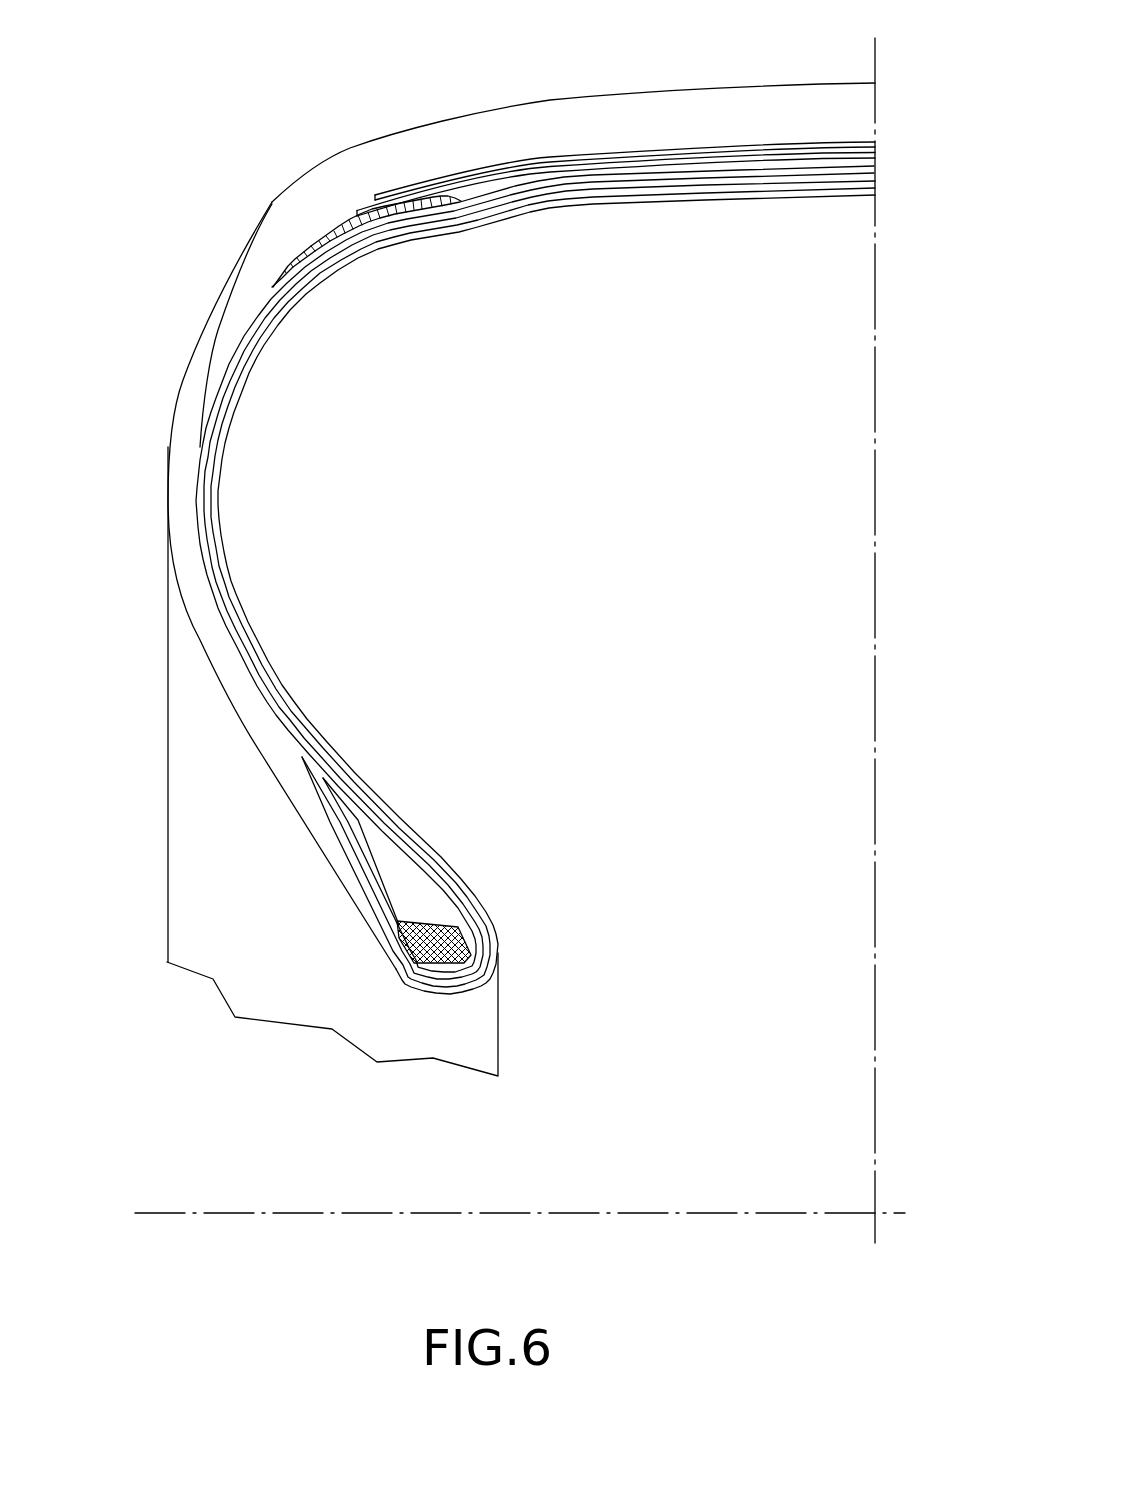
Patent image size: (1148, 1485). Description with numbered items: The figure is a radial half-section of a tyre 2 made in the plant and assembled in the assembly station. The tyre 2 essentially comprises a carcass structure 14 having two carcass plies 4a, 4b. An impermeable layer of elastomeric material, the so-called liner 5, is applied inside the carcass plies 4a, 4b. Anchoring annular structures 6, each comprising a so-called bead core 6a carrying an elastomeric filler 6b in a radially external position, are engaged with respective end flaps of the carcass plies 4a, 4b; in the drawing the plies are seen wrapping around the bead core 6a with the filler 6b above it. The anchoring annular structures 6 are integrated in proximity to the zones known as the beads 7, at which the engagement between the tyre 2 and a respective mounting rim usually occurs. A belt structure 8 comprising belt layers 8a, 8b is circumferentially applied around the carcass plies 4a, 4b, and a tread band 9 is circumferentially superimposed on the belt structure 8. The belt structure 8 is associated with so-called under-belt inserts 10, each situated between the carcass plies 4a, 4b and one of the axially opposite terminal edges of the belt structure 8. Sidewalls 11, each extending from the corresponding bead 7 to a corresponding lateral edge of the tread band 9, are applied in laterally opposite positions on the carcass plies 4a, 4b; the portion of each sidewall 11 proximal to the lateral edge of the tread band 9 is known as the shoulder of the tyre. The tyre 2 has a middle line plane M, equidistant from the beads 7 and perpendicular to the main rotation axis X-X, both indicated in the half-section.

The tyre 2 is at (165, 225).
The carcass ply 4a is at (277, 703).
The carcass ply 4b is at (257, 700).
The liner 5 is at (383, 252).
The anchoring annular structure 6 is at (408, 921).
The bead core 6a is at (470, 940).
The elastomeric filler 6b is at (377, 857).
The bead 7 is at (447, 863).
The belt structure 8 is at (636, 132).
The belt layer 8a is at (473, 175).
The belt layer 8b is at (543, 173).
The tread band 9 is at (713, 120).
The under-belt insert 10 is at (343, 236).
The sidewall 11 is at (198, 382).
The carcass structure 14 is at (197, 475).